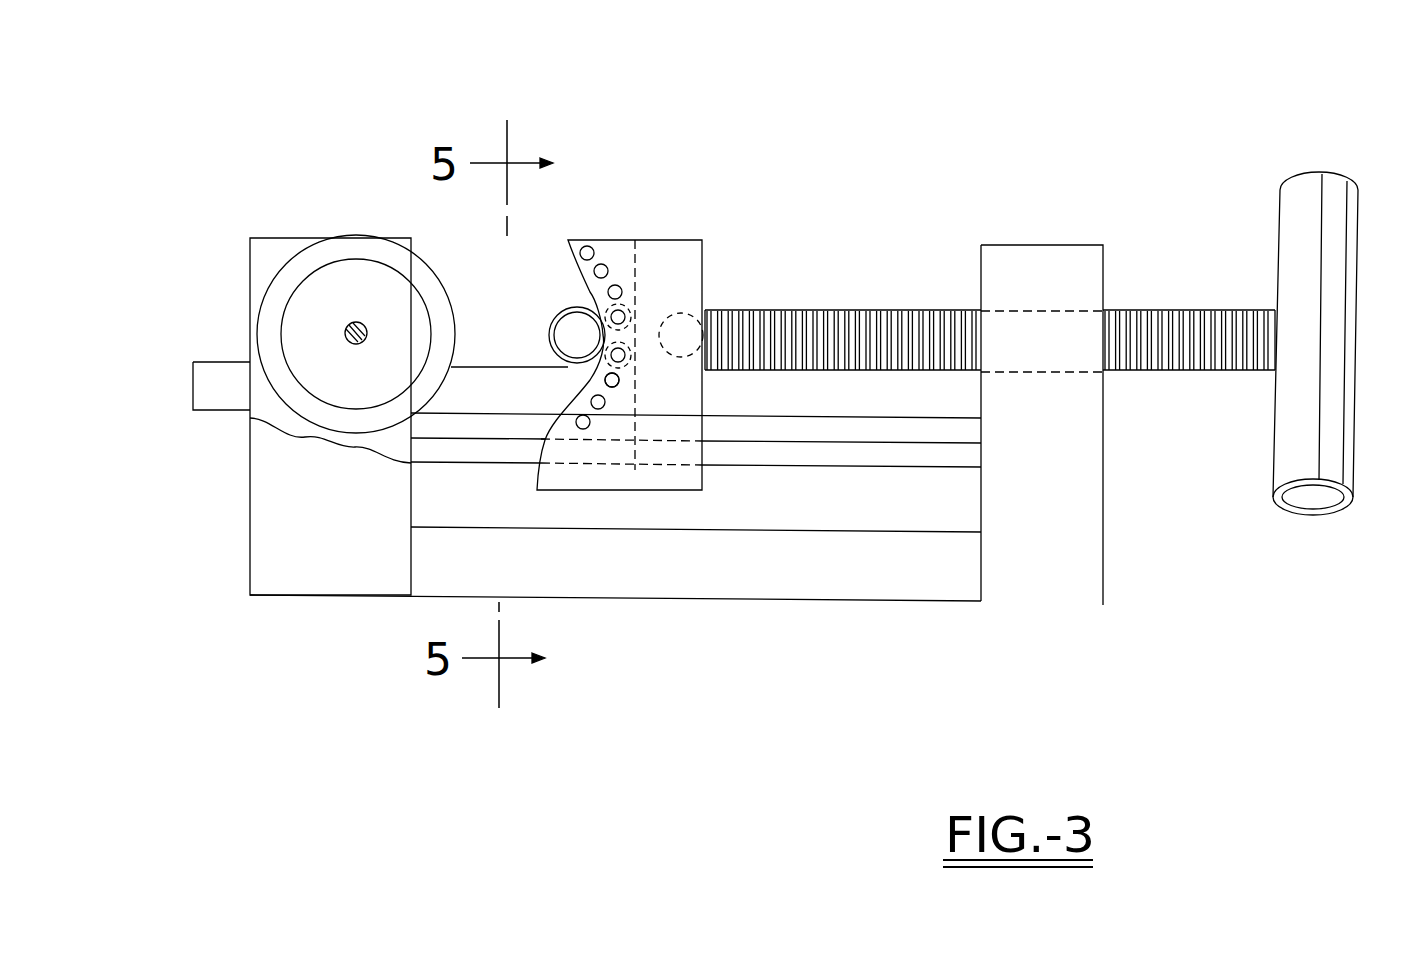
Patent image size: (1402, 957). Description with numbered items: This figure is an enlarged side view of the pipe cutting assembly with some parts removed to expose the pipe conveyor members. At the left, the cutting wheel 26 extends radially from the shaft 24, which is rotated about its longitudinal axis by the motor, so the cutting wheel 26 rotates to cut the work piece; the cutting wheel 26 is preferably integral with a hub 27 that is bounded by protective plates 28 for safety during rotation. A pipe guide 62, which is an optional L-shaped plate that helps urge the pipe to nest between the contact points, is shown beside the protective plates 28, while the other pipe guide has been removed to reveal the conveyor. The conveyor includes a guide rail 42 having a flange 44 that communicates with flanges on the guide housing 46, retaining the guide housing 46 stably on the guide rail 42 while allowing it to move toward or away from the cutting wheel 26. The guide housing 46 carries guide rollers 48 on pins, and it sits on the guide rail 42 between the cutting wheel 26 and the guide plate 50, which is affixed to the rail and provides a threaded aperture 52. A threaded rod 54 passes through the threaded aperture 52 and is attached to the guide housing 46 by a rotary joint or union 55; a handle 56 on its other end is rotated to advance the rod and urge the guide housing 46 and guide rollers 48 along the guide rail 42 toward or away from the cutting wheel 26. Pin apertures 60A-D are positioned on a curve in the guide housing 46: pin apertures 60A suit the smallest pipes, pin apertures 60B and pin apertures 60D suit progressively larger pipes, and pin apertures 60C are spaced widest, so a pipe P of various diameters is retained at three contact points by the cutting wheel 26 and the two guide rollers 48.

The shaft 24 is at (348, 328).
The cutting wheel 26 is at (360, 237).
The hub 27 is at (300, 287).
The protective plates 28 is at (272, 238).
The guide rail 42 is at (885, 580).
The flange 44 is at (877, 455).
The guide housing 46 is at (696, 240).
The guide rollers 48 is at (628, 312).
The guide plate 50 is at (1025, 245).
The threaded aperture 52 is at (1048, 372).
The threaded rod 54 is at (1170, 310).
The rotary joint or union 55 is at (686, 316).
The handle 56 is at (1332, 180).
The pin apertures 60A-D is at (577, 236).
The pin aperture 60A is at (622, 358).
The pin aperture 60B is at (605, 382).
The pin aperture 60C is at (602, 406).
The pin aperture 60D is at (581, 428).
The pipe guides 62 is at (213, 361).
The pipe P is at (553, 330).